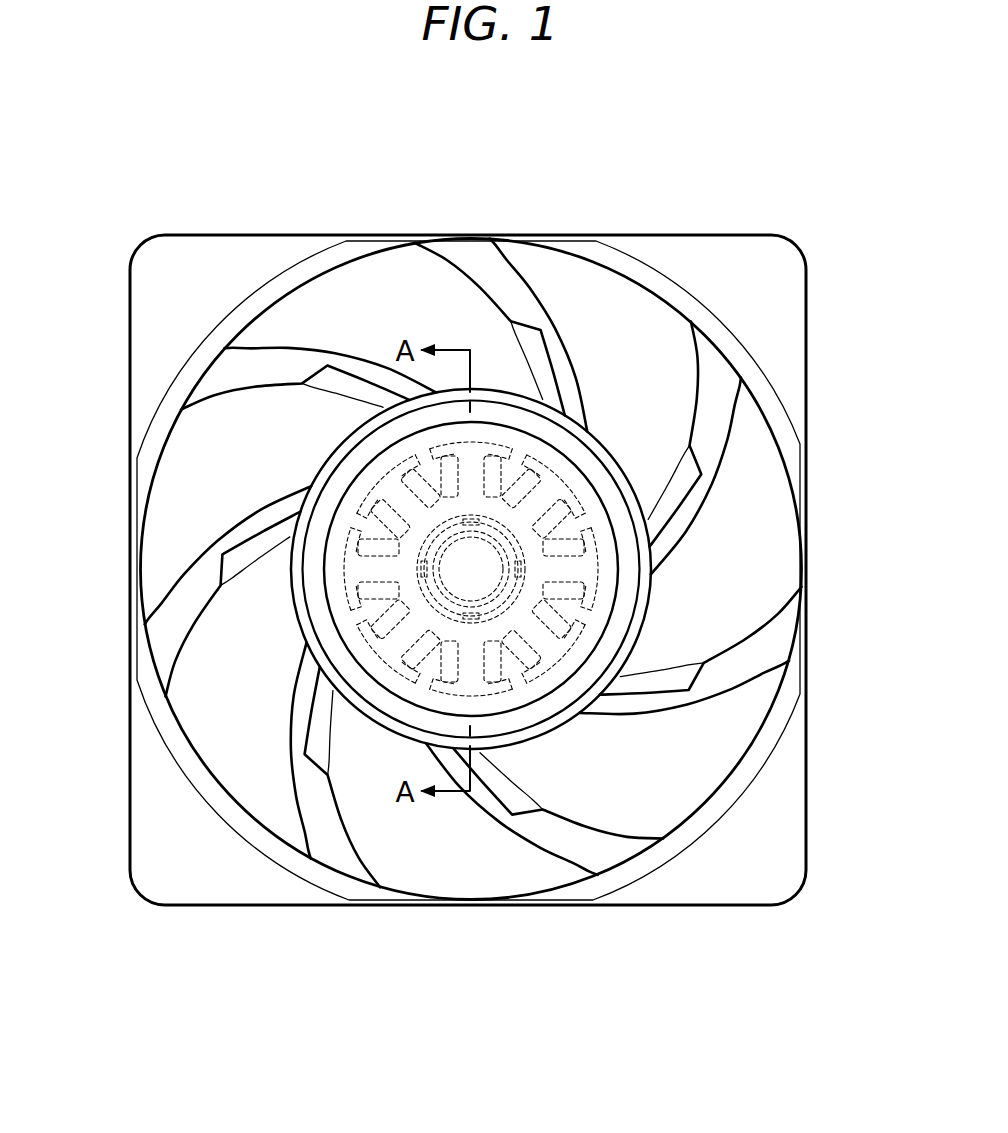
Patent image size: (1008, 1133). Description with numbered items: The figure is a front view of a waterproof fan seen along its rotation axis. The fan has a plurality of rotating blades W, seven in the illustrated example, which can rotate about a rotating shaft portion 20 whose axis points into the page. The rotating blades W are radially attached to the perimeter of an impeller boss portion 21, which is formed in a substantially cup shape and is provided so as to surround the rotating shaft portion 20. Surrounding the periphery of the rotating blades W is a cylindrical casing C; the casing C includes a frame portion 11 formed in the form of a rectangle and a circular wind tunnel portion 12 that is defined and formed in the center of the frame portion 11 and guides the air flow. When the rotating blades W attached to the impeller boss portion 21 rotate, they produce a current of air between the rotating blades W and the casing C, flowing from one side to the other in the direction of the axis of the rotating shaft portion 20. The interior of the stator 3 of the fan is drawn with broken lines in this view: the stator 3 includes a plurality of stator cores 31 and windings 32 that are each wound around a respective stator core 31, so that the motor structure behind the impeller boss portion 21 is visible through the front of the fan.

The frame portion 11 is at (648, 250).
The wind tunnel portion 12 is at (675, 310).
The casing C is at (610, 237).
The rotating blades W is at (425, 285).
The impeller boss portion 21 is at (603, 480).
The rotating shaft portion 20 is at (487, 562).
The stator 3 is at (311, 569).
The windings 32 is at (365, 522).
The stator cores 31 is at (378, 572).